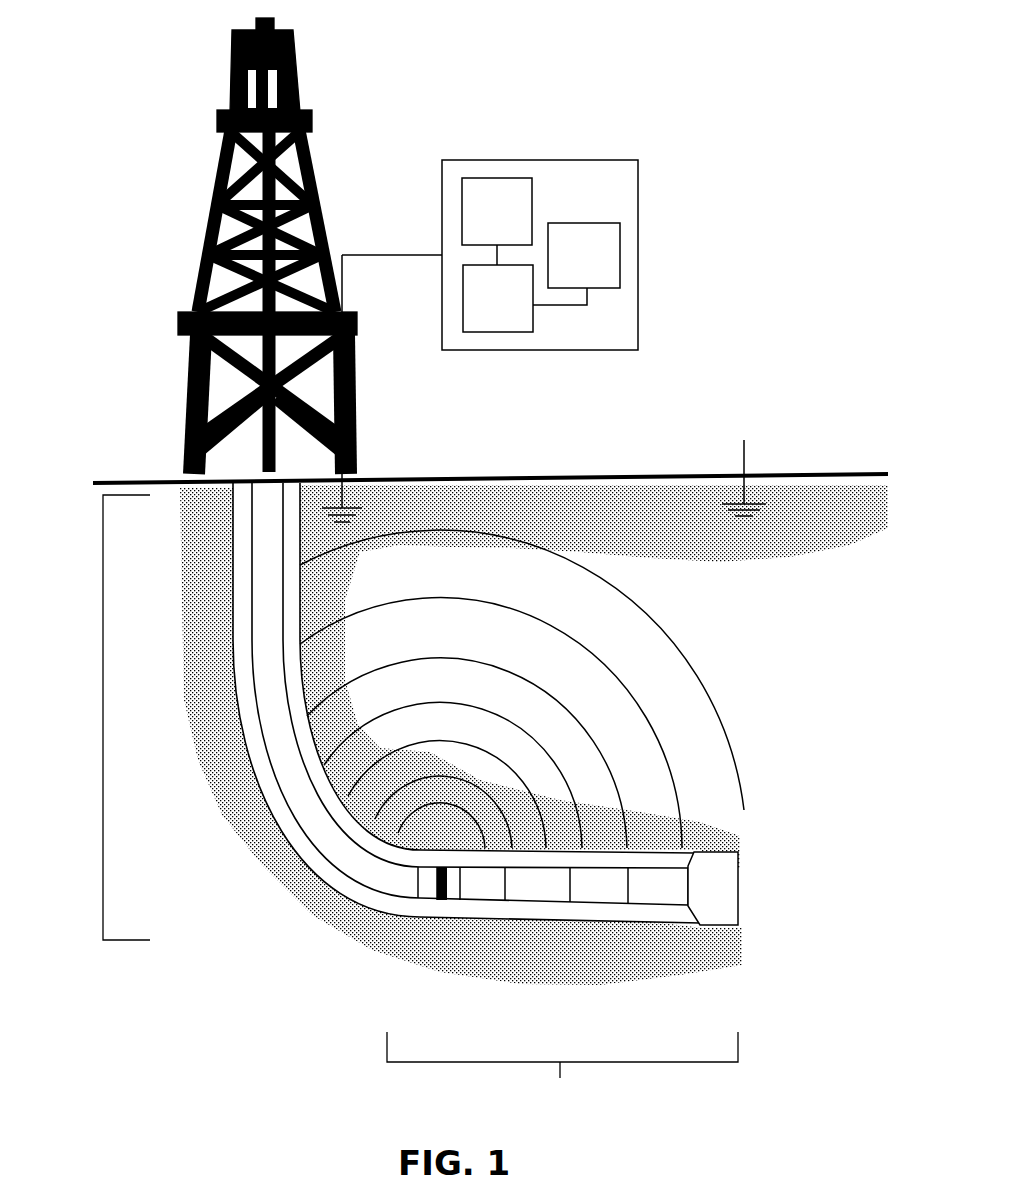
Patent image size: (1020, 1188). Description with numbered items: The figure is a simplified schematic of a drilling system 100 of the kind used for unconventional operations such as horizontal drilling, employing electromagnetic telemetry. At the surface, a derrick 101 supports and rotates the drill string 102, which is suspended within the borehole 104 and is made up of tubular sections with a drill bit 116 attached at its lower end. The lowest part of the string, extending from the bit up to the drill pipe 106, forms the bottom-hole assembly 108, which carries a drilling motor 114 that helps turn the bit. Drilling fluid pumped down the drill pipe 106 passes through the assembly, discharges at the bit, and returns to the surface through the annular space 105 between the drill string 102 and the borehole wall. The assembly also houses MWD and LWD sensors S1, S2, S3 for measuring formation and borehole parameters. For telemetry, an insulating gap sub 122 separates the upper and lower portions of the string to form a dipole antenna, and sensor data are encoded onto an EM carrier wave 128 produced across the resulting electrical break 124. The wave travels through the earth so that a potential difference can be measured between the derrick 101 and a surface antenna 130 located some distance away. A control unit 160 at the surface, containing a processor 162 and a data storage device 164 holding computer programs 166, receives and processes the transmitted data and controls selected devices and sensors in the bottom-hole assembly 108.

The drilling system 100 is at (578, 88).
The derrick 101 is at (298, 52).
The drill string 102 is at (103, 725).
The borehole 104 is at (235, 585).
The annular space 105 is at (278, 798).
The drill pipe 106 is at (272, 707).
The bottom-hole assembly 108 is at (562, 1074).
The drilling motor 114 is at (655, 888).
The drill bit 116 is at (742, 893).
The gap sub 122 is at (423, 915).
The electrical break 124 is at (441, 915).
The EM carrier wave 128 is at (728, 627).
The surface antenna 130 is at (112, 481).
The control unit 160 is at (490, 160).
The processor 162 is at (497, 211).
The data storage device 164 is at (498, 288).
The computer programs 166 is at (576, 264).
The sensor S1 is at (470, 888).
The sensor S2 is at (538, 888).
The sensor S3 is at (603, 888).